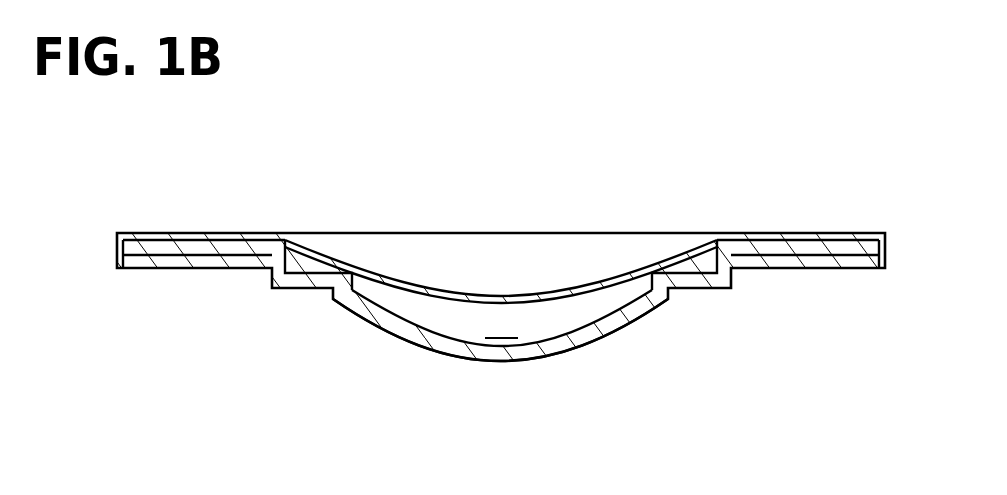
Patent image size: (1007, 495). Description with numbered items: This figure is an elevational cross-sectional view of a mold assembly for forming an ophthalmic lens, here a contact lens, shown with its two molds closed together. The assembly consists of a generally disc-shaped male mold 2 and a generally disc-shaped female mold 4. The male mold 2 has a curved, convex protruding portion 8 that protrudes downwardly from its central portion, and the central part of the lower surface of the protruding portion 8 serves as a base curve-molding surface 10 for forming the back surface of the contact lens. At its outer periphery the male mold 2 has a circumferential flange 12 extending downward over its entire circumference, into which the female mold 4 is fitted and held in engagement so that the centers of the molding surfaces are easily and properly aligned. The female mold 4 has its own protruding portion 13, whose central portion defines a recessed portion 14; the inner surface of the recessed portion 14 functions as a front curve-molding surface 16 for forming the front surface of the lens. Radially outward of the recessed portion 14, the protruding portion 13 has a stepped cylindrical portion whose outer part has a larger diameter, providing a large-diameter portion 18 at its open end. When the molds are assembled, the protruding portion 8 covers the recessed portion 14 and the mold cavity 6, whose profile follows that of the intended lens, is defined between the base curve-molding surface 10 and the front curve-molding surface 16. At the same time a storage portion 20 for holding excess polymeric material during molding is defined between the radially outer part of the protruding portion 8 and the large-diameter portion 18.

The male mold 2 is at (818, 232).
The female mold 4 is at (817, 258).
The mold cavity 6 is at (501, 324).
The protruding portion 8 is at (678, 259).
The molding surface 10 is at (600, 287).
The circumferential flange 12 is at (118, 258).
The protruding portion 13 is at (290, 297).
The recessed portion 14 is at (417, 338).
The molding surface 16 is at (547, 342).
The large-diameter portion 18 is at (726, 270).
The storage portion 20 is at (302, 260).